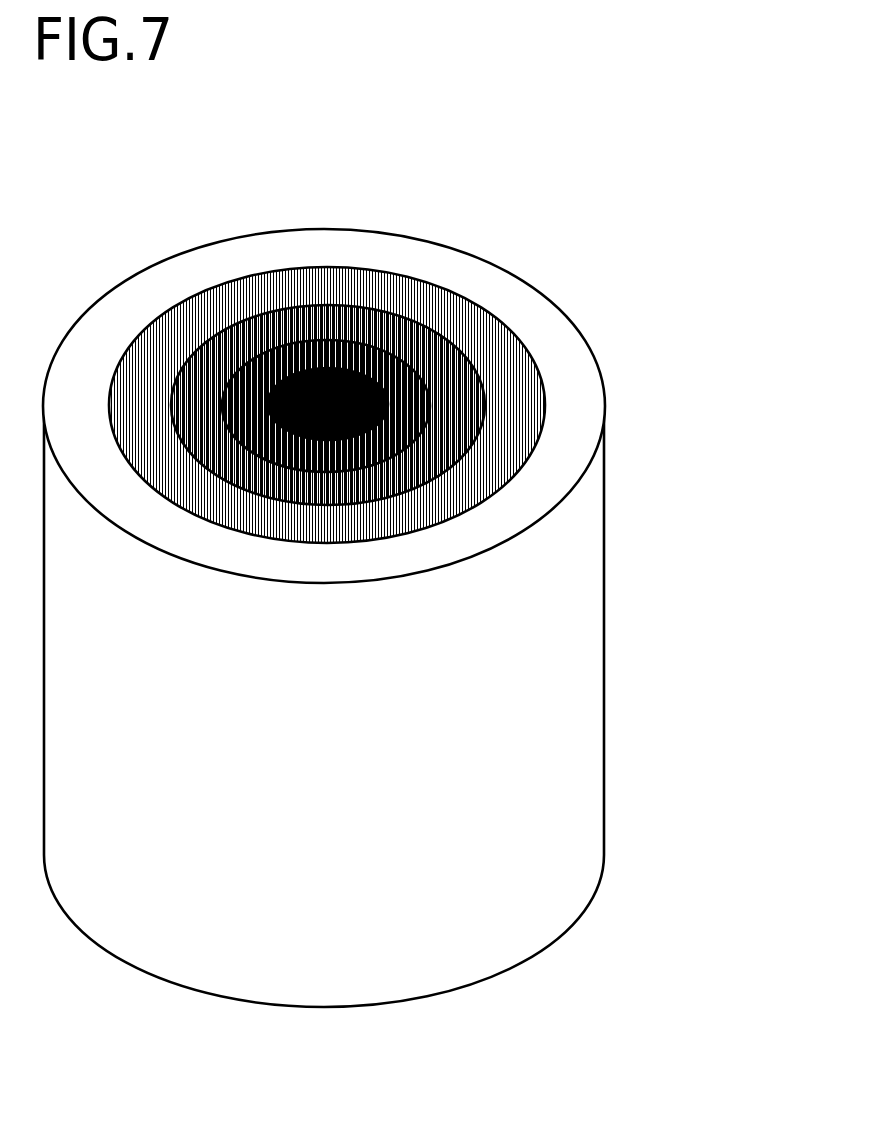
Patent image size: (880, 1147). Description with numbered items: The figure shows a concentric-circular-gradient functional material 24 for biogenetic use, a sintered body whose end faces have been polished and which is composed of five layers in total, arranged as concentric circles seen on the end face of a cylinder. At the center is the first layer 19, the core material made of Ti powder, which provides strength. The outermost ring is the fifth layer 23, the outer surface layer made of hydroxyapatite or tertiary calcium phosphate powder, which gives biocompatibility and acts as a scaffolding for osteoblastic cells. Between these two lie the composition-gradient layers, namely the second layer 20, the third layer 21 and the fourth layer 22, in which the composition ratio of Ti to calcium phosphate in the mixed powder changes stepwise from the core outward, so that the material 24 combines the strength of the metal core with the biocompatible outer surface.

The first layer 19 is at (347, 367).
The second layer 20 is at (397, 405).
The third layer 21 is at (465, 405).
The fourth layer 22 is at (513, 405).
The fifth layer 23 is at (562, 435).
The concentric-circular-gradient functional material 24 is at (537, 605).